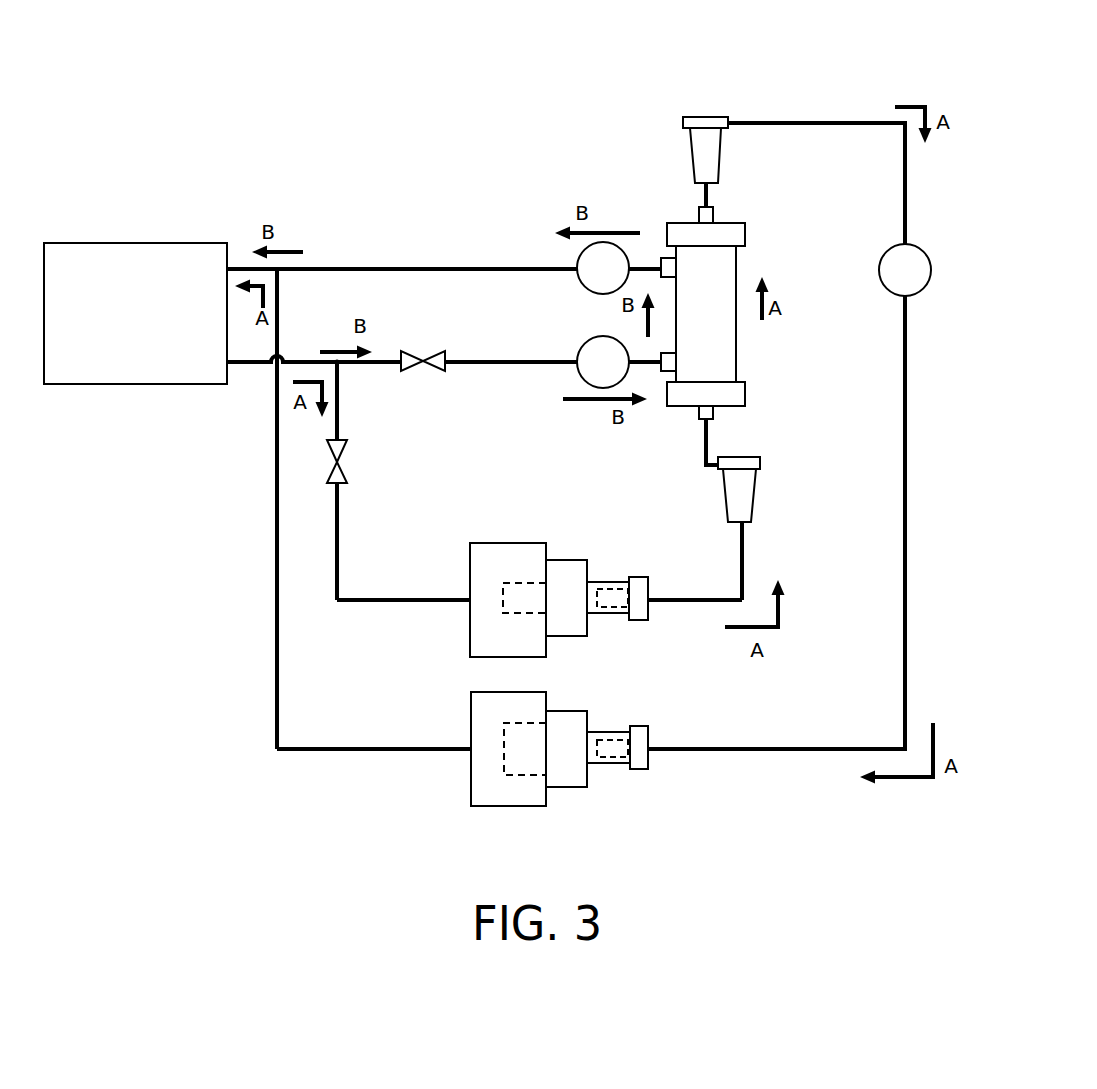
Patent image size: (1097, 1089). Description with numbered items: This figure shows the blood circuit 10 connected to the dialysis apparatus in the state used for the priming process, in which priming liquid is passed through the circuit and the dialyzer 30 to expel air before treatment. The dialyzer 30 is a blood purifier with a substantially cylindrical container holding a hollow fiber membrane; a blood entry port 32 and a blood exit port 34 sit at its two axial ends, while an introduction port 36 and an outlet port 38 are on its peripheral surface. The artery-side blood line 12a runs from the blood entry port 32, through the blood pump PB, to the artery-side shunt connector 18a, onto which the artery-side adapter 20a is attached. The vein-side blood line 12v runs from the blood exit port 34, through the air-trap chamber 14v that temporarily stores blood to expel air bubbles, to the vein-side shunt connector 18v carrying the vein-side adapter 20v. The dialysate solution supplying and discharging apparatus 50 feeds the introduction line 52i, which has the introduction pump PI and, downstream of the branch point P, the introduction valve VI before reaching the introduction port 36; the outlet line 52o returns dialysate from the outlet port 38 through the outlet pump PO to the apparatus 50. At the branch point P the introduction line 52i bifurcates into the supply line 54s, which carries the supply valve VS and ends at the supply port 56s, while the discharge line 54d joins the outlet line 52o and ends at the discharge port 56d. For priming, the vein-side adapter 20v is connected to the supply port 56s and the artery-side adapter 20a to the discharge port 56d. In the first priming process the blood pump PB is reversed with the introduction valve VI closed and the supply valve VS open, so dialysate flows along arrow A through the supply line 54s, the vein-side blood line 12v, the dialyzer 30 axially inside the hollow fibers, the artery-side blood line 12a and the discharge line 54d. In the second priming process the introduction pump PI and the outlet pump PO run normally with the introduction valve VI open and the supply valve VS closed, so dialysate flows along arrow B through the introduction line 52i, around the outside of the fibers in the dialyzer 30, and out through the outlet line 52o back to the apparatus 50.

The blood circuit 10 is at (788, 92).
The dialysate solution supplying and discharging apparatus 50 is at (172, 243).
The outlet line 52o is at (392, 268).
The introduction line 52i is at (494, 361).
The branch point P is at (341, 365).
The introduction valve VI is at (415, 366).
The supply valve VS is at (343, 471).
The outlet pump PO is at (603, 268).
The introduction pump PI is at (603, 362).
The blood pump PB is at (905, 270).
The dialyzer 30 is at (737, 330).
The blood entry port 32 is at (714, 218).
The blood exit port 34 is at (714, 412).
The outlet port 38 is at (659, 258).
The introduction port 36 is at (667, 373).
The air-trap chamber 14v is at (692, 143).
The vein-side blood line 12v is at (745, 577).
The artery-side blood line 12a is at (907, 428).
The vein-side shunt connector 18v is at (641, 576).
The artery-side shunt connector 18a is at (642, 726).
The vein-side adapter 20v is at (568, 560).
The artery-side adapter 20a is at (568, 711).
The supply port 56s is at (521, 543).
The discharge port 56d is at (501, 808).
The supply line 54s is at (450, 598).
The discharge line 54d is at (425, 748).